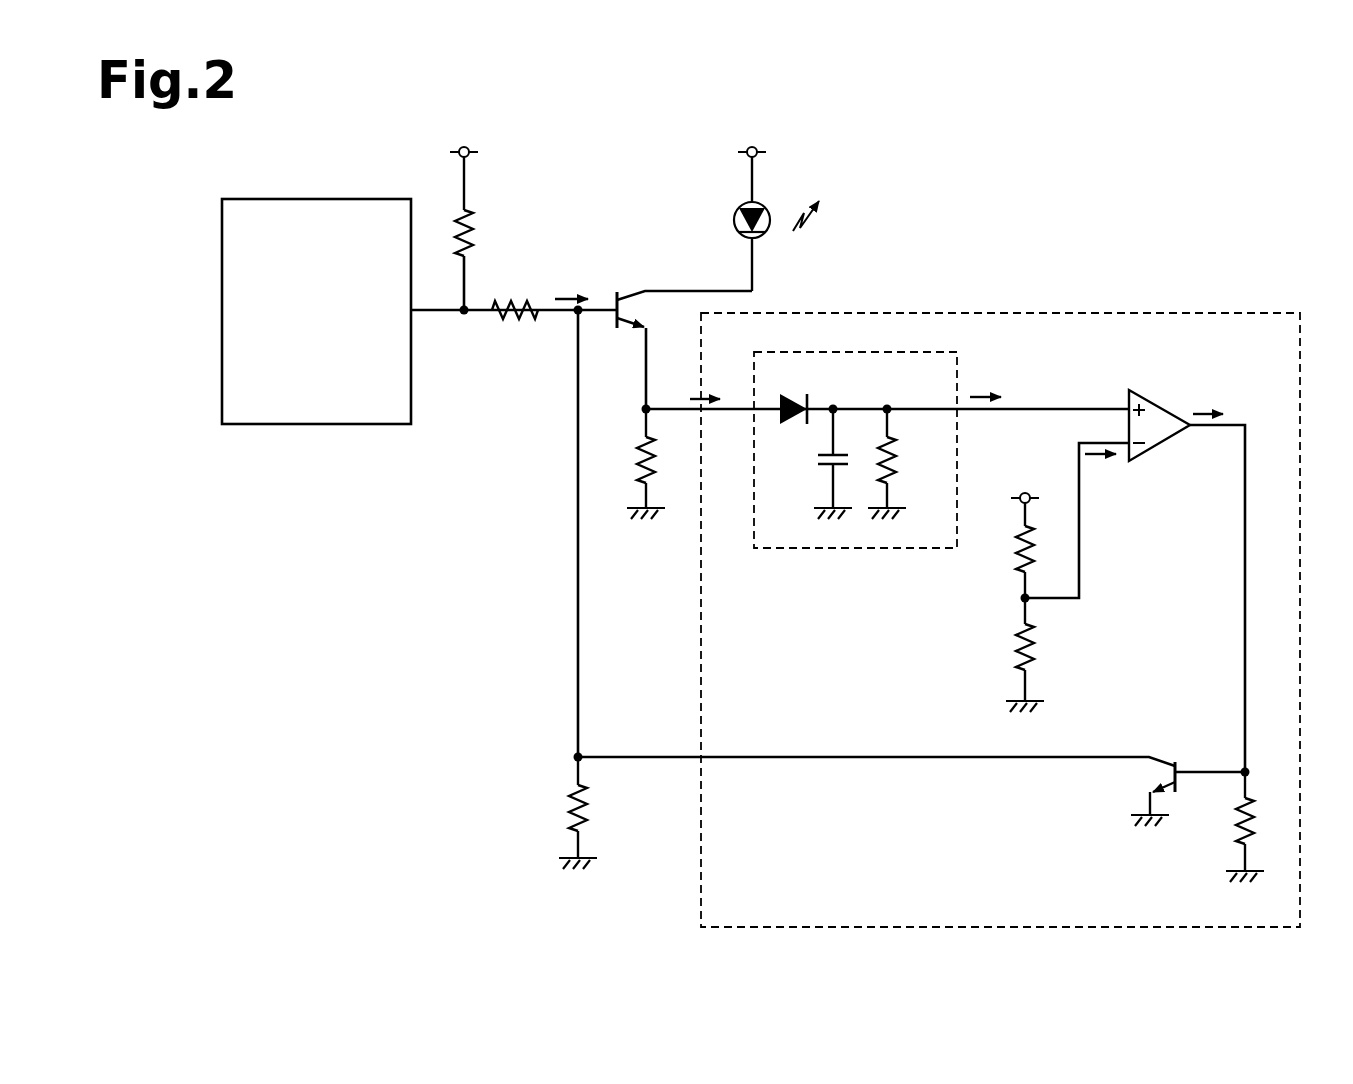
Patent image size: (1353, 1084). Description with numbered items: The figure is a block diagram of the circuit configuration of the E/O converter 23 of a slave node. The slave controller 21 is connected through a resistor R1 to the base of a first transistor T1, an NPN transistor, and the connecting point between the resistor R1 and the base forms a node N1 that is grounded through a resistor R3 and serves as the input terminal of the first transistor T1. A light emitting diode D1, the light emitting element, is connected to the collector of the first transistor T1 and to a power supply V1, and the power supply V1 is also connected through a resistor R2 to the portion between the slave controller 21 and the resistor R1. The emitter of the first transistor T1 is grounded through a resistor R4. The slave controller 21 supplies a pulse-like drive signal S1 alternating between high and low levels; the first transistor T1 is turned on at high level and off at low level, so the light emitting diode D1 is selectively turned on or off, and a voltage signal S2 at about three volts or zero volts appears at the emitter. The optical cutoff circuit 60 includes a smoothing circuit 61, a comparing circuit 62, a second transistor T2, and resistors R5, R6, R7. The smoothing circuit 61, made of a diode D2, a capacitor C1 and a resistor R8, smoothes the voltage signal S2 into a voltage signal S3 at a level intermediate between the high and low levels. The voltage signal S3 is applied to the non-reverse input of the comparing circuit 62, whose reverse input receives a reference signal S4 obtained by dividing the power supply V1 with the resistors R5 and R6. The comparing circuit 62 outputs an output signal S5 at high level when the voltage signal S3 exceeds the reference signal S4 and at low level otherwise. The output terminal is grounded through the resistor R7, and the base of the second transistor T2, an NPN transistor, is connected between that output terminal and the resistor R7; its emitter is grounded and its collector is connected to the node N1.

The slave controller 21 is at (288, 199).
The E/O converter 23 is at (638, 158).
The optical cutoff circuit 60 is at (1178, 313).
The smoothing circuit 61 is at (918, 352).
The comparing circuit 62 is at (1135, 390).
The power supply V1 is at (478, 151).
The resistor R1 is at (516, 322).
The resistor R2 is at (476, 230).
The resistor R3 is at (570, 811).
The resistor R4 is at (638, 461).
The resistor R5 is at (1016, 550).
The resistor R6 is at (1016, 651).
The resistor R7 is at (1236, 822).
The resistor R8 is at (896, 466).
The first transistor T1 is at (615, 292).
The second transistor T2 is at (1177, 762).
The light emitting diode D1 is at (733, 220).
The light emitting diode D2 is at (796, 395).
The capacitor C1 is at (824, 462).
The node N1 is at (576, 314).
The drive signal S1 is at (572, 282).
The voltage signal S2 is at (713, 383).
The voltage signal S3 is at (986, 381).
The reference signal S4 is at (1102, 474).
The output signal S5 is at (1214, 398).